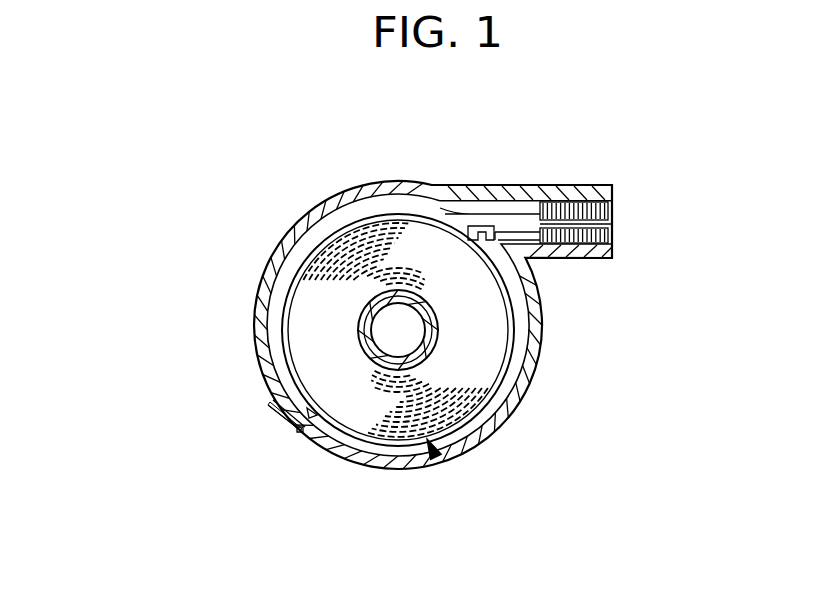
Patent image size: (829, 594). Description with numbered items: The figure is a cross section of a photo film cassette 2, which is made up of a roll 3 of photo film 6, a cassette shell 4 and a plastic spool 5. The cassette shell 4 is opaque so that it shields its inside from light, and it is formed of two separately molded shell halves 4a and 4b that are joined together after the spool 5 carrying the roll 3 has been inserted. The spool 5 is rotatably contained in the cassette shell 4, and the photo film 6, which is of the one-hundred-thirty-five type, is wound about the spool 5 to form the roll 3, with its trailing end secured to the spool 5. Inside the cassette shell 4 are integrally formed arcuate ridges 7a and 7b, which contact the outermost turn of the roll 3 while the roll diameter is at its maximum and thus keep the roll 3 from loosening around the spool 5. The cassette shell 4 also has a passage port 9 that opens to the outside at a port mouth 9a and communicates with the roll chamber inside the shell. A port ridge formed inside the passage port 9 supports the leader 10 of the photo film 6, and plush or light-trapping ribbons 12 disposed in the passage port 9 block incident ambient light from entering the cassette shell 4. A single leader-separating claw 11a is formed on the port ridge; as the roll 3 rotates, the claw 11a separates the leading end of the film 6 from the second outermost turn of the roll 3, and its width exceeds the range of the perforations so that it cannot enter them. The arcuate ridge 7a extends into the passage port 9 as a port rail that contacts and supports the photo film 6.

The photo film cassette 2 is at (266, 222).
The roll 3 is at (436, 457).
The cassette shell 4 is at (165, 415).
The shell half 4a is at (317, 455).
The shell half 4b is at (263, 396).
The spool 5 is at (363, 332).
The photo film 6 is at (482, 392).
The arcuate ridge 7a is at (520, 358).
The arcuate ridge 7b is at (338, 222).
The passage port 9 is at (579, 193).
The port mouth 9a is at (612, 195).
The leader 10 is at (447, 215).
The leader-separating claw 11a is at (472, 226).
The light-trapping ribbons 12 is at (612, 236).